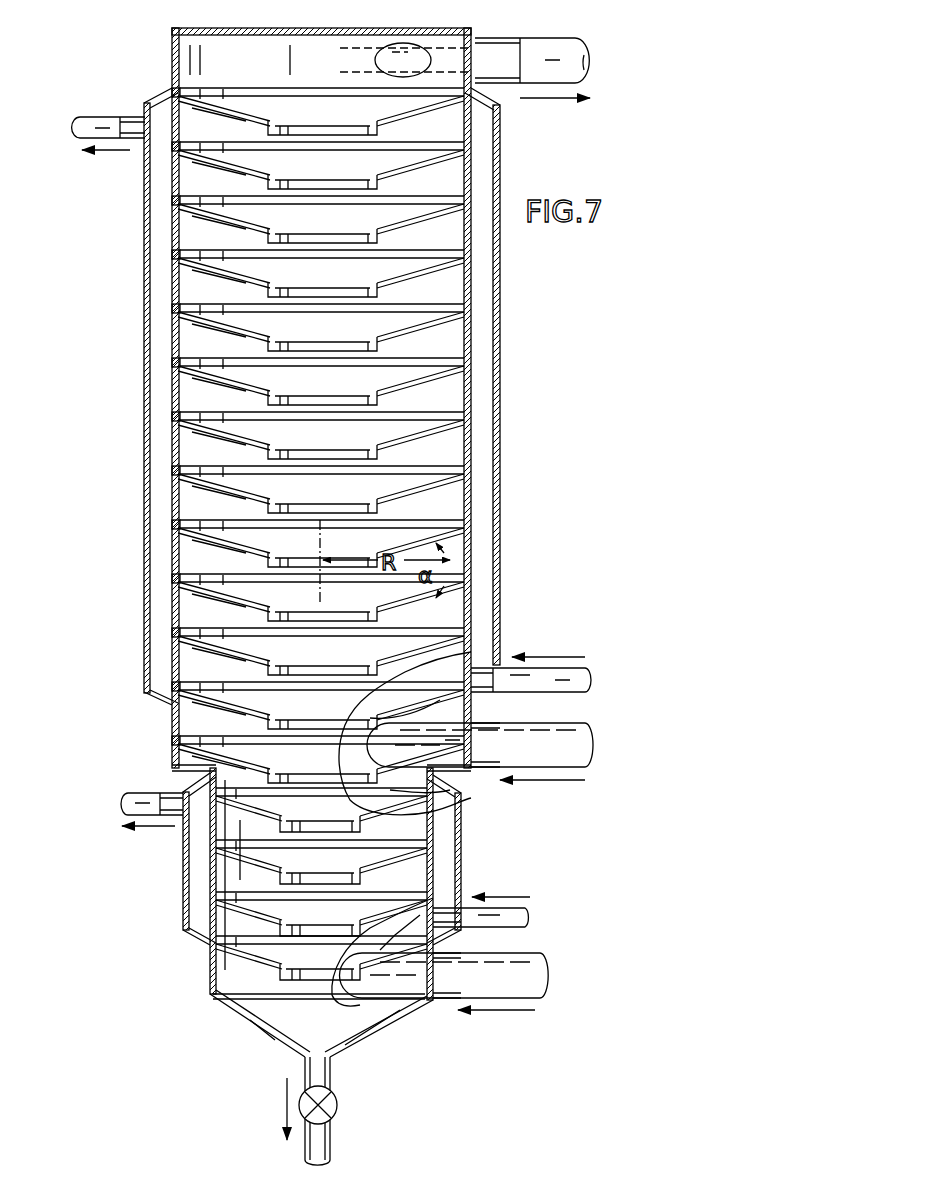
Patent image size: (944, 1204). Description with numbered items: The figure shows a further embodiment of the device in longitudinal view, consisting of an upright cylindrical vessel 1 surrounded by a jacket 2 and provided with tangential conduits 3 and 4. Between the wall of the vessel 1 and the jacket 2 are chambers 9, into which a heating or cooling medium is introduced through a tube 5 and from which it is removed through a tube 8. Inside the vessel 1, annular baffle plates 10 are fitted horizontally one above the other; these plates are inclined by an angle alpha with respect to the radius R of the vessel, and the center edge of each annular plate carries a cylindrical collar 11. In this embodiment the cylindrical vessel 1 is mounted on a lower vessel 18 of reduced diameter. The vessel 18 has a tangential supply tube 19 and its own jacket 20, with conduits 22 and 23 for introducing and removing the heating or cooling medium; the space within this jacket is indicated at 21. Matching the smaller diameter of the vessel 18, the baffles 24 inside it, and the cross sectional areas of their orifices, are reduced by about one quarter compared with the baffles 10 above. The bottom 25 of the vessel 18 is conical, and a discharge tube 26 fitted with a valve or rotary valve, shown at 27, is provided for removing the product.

The cylindrical vessel 1 is at (172, 50).
The jacket 2 is at (144, 255).
The tangential conduit 3 is at (587, 740).
The tangential conduit 4 is at (586, 56).
The tube 5 is at (585, 672).
The tube 8 is at (86, 118).
The chamber 9 is at (144, 412).
The annular baffle plate 10 is at (440, 335).
The cylindrical collar 11 is at (408, 456).
The vessel 18 is at (210, 970).
The tangential supply tube 19 is at (542, 975).
The jacket 20 is at (183, 858).
The lower jacket annular space 21 is at (196, 905).
The conduit 22 is at (526, 913).
The conduit 23 is at (135, 794).
The baffle 24 is at (405, 870).
The bottom 25 is at (252, 1022).
The tube 26 is at (330, 1068).
The valve 27 is at (332, 1114).